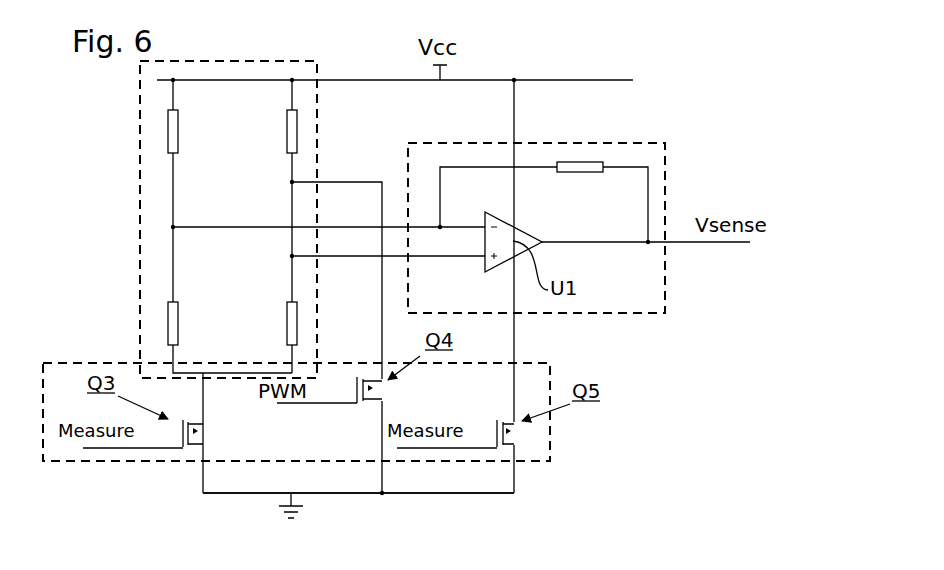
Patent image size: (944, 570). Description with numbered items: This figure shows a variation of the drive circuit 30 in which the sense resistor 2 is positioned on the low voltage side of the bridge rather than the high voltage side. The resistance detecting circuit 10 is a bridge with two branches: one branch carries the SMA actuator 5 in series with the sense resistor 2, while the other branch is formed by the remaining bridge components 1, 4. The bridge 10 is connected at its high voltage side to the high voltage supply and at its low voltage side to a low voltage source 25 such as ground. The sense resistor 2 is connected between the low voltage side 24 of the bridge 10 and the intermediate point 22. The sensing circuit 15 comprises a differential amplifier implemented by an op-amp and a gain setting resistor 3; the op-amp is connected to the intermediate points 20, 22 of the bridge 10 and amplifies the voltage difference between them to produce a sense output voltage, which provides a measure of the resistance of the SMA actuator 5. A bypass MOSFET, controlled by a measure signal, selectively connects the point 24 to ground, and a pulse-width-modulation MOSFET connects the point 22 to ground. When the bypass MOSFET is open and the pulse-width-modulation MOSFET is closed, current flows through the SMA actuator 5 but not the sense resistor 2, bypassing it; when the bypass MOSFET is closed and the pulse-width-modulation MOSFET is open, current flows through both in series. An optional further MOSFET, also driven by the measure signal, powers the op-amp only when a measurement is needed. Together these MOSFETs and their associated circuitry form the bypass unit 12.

The first resistor 1 is at (168, 130).
The sense resistor 2 is at (287, 327).
The gain setting resistor 3 is at (578, 166).
The fourth resistor 4 is at (168, 330).
The SMA actuator 5 is at (287, 130).
The resistance detecting circuit 10 is at (278, 61).
The bypass unit 12 is at (95, 461).
The sensing circuit 15 is at (470, 143).
The intermediate point 20 is at (171, 227).
The intermediate point 22 is at (292, 182).
The low voltage side 24 is at (203, 373).
The low voltage source 25 is at (360, 494).
The drive circuit 30 is at (700, 106).